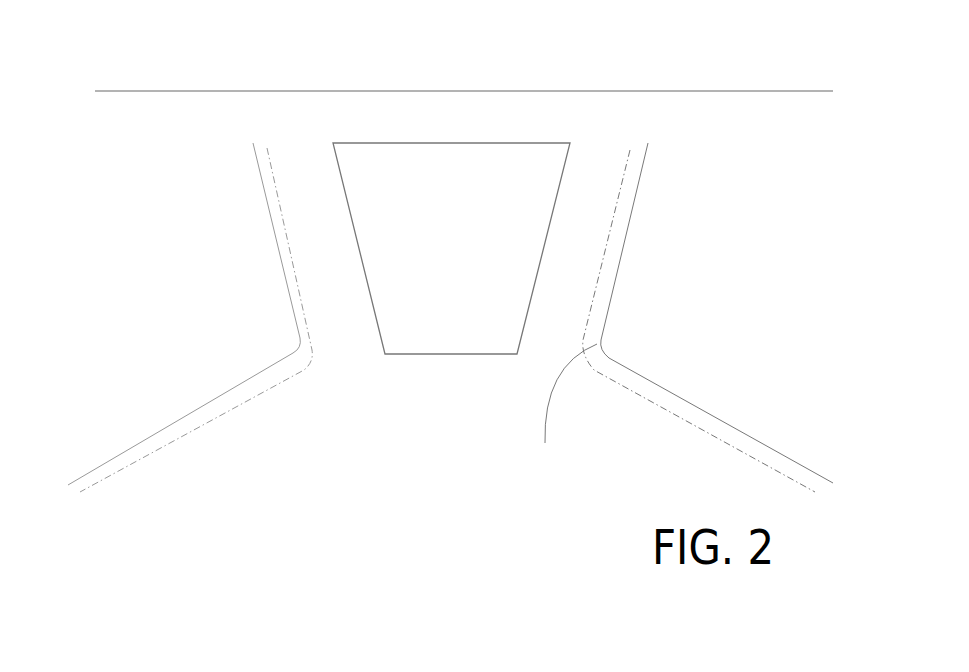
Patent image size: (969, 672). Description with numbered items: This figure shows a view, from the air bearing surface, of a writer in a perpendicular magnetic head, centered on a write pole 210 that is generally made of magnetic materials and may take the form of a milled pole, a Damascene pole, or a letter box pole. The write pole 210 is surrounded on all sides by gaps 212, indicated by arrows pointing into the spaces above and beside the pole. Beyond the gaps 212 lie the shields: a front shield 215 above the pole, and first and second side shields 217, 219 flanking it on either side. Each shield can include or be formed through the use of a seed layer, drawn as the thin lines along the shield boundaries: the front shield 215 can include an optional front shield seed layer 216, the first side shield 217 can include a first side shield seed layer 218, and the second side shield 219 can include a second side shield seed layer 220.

The write pole 210 is at (470, 258).
The gaps 212 is at (312, 187).
The front shield 215 is at (449, 83).
The front shield seed layer 216 is at (603, 102).
The first side shield 217 is at (172, 249).
The first side shield seed layer 218 is at (309, 355).
The second side shield 219 is at (719, 265).
The second side shield seed layer 220 is at (559, 418).